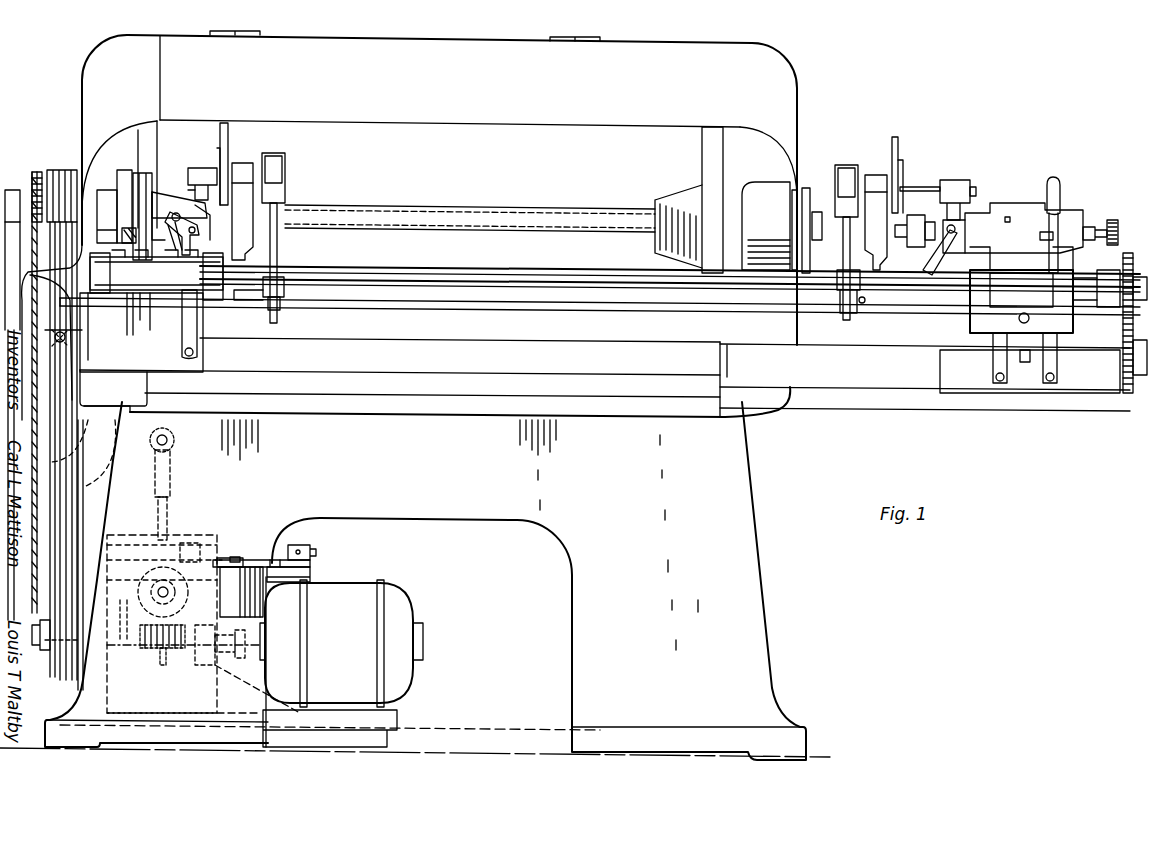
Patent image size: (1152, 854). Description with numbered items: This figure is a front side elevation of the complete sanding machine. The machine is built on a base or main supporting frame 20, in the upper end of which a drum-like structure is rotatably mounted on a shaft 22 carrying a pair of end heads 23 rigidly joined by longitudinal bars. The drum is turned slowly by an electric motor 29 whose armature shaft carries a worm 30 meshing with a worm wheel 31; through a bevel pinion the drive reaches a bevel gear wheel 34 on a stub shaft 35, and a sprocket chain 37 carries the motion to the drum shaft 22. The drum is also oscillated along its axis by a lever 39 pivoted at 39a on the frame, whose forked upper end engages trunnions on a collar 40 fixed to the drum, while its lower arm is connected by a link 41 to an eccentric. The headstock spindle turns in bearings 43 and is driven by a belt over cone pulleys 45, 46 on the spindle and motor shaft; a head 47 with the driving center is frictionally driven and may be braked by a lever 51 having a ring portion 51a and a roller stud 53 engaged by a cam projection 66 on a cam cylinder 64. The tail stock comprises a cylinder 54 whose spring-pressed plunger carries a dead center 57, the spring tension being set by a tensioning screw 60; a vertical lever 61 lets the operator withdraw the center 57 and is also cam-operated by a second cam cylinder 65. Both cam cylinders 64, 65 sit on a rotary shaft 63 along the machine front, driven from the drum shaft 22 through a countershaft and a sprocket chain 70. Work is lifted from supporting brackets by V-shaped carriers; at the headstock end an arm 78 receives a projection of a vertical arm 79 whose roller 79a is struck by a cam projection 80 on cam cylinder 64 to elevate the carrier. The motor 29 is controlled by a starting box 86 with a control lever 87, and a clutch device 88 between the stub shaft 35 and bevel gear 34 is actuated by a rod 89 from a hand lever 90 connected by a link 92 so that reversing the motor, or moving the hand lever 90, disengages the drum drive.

The base 20 is at (420, 425).
The shaft 22 is at (472, 210).
The end heads 23 is at (185, 132).
The electric motor 29 is at (410, 675).
The worm 30 is at (163, 650).
The worm wheel 31 is at (190, 640).
The bevel gear wheel 34 is at (140, 650).
The stub shaft 35 is at (150, 580).
The sprocket chain 37 is at (40, 527).
The lever 39 is at (128, 455).
The pivot 39a is at (55, 337).
The collar 40 is at (55, 468).
The link 41 is at (170, 507).
The bearings 43 is at (25, 188).
The cone pulley 45 is at (73, 170).
The cone pulley 46 is at (63, 672).
The head 47 is at (165, 185).
The lever 51 is at (122, 212).
The ring portion 51a is at (120, 175).
The roller stud 53 is at (126, 300).
The cylinder 54 is at (1003, 218).
The dead center 57 is at (905, 220).
The tensioning screw 60 is at (1112, 220).
The vertical lever 61 is at (1054, 178).
The rotary shaft 63 is at (548, 275).
The cam cylinder 64 is at (140, 322).
The cam cylinder 65 is at (985, 312).
The cam projection 66 is at (108, 293).
The sprocket chain 70 is at (1122, 332).
The arm 78 is at (153, 250).
The vertical arm 79 is at (197, 345).
The roller 79a is at (190, 250).
The cam projection 80 is at (170, 280).
The starting box 86 is at (250, 608).
The control lever 87 is at (236, 557).
The clutch device 88 is at (217, 555).
The rod 89 is at (252, 552).
The hand lever 90 is at (312, 565).
The link 92 is at (290, 545).